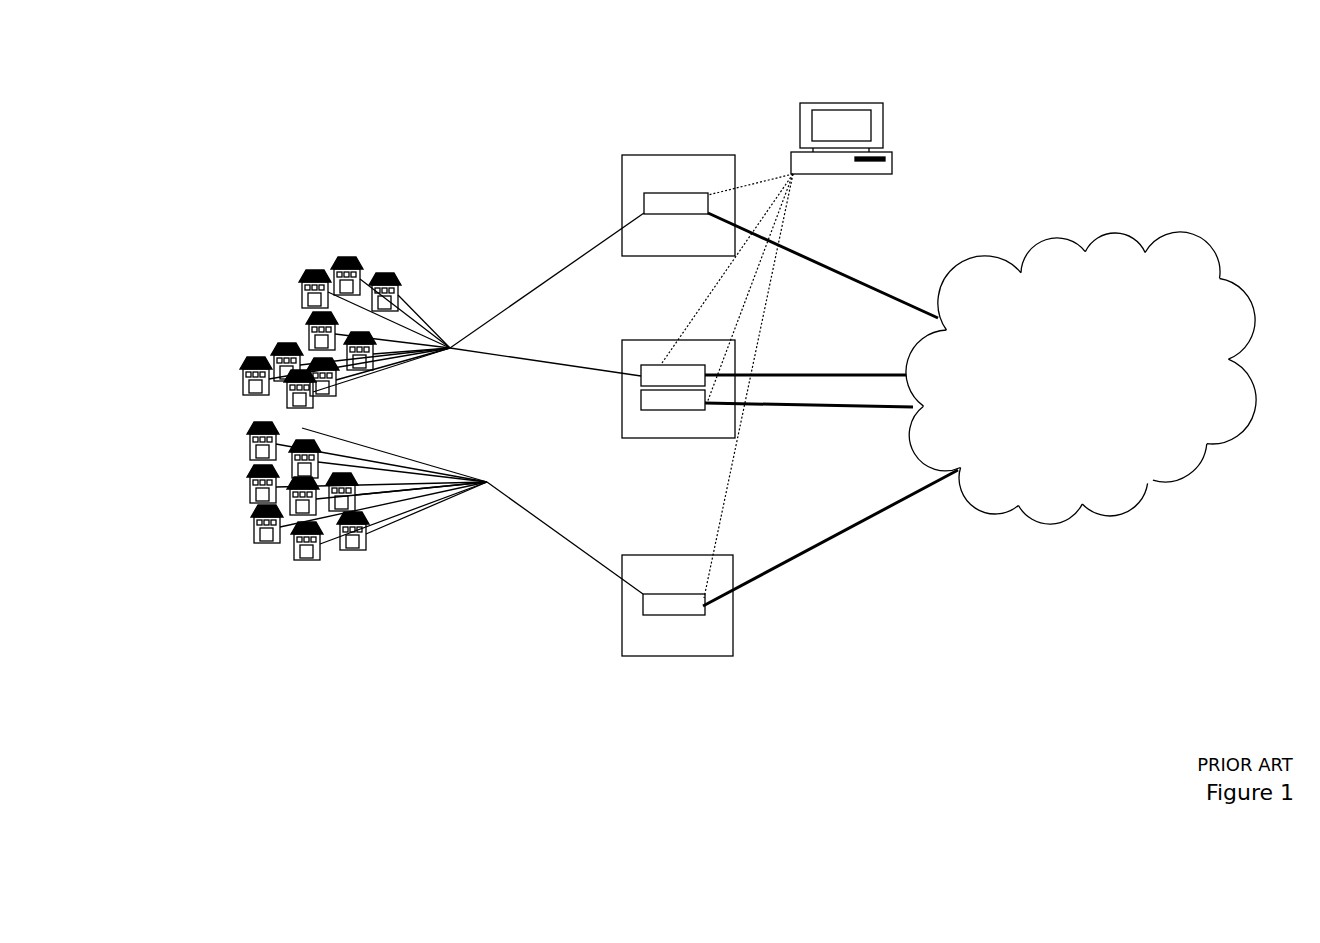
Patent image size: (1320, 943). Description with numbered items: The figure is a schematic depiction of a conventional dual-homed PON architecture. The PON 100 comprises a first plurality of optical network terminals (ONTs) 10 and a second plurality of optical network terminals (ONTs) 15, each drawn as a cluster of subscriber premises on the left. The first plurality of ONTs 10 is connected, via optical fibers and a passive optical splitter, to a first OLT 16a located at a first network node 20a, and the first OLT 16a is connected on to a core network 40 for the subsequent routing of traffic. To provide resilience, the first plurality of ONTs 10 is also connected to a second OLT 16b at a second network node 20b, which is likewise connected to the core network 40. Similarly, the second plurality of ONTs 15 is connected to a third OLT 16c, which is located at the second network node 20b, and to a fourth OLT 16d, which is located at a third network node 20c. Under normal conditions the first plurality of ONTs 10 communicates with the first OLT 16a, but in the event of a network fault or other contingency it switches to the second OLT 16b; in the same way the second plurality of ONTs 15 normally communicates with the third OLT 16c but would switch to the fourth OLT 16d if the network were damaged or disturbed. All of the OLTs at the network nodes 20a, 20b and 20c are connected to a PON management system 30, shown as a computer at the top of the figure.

The PON 100 is at (318, 135).
The first plurality of optical network terminals 10 is at (282, 337).
The second plurality of optical network terminals 15 is at (293, 558).
The first optical line terminal 16a is at (648, 202).
The second optical line terminal 16b is at (650, 380).
The third optical line terminal 16c is at (652, 404).
The fourth optical line terminal 16d is at (658, 612).
The first network node 20a is at (628, 165).
The second network node 20b is at (665, 425).
The third network node 20c is at (710, 647).
The PON management system 30 is at (890, 140).
The core network 40 is at (1083, 410).